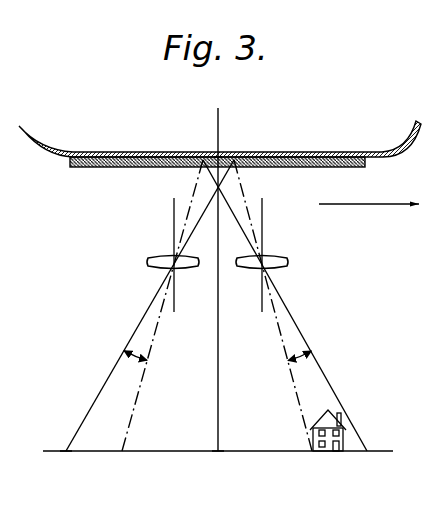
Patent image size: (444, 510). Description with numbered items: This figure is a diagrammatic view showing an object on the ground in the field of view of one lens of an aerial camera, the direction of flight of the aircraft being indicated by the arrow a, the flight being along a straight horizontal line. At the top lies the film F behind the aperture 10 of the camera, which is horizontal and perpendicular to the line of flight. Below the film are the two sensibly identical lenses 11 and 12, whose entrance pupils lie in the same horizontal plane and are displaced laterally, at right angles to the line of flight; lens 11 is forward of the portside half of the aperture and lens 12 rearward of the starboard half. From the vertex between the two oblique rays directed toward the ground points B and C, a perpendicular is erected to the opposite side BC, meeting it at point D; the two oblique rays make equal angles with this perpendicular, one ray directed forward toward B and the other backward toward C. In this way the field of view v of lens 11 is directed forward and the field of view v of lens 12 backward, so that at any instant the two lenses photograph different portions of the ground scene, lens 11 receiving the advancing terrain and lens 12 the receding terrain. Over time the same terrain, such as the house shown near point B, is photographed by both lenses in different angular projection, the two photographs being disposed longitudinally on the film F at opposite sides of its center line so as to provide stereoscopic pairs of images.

The aperture 10 is at (217, 158).
The lens 11 is at (275, 264).
The lens 12 is at (160, 263).
The film F is at (319, 152).
The arrow indicating direction of flight a is at (369, 194).
The field of view v is at (217, 362).
The point B is at (345, 430).
The point C is at (57, 441).
The point D is at (216, 466).